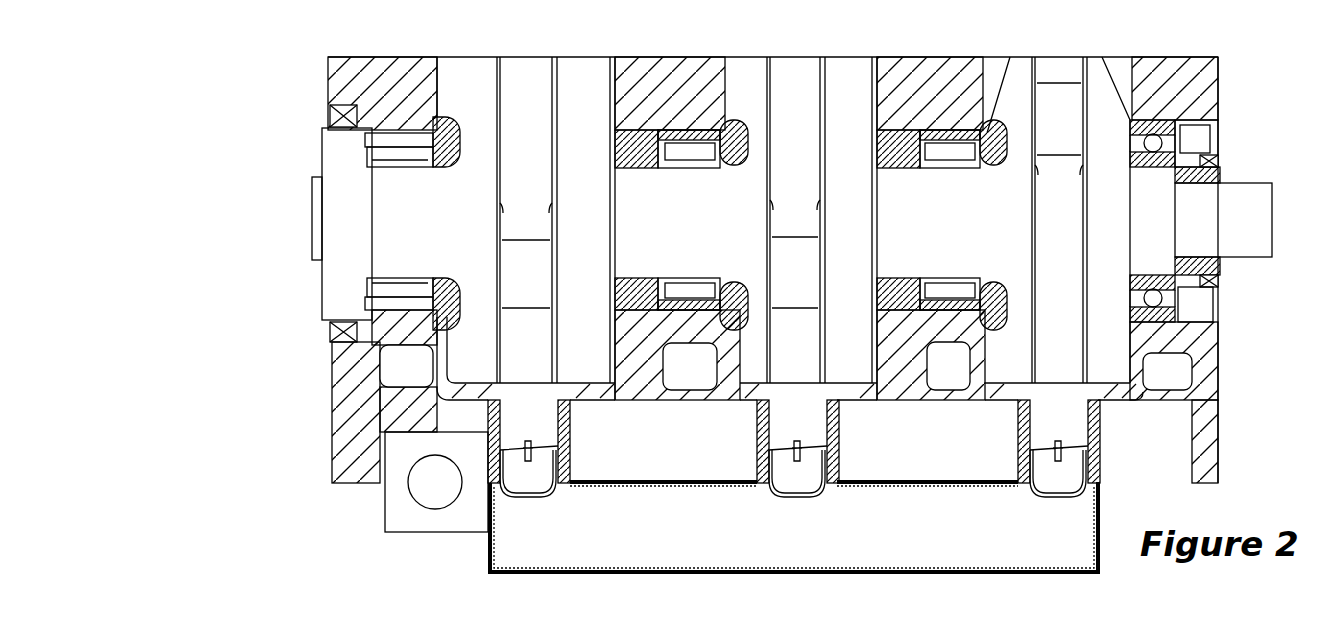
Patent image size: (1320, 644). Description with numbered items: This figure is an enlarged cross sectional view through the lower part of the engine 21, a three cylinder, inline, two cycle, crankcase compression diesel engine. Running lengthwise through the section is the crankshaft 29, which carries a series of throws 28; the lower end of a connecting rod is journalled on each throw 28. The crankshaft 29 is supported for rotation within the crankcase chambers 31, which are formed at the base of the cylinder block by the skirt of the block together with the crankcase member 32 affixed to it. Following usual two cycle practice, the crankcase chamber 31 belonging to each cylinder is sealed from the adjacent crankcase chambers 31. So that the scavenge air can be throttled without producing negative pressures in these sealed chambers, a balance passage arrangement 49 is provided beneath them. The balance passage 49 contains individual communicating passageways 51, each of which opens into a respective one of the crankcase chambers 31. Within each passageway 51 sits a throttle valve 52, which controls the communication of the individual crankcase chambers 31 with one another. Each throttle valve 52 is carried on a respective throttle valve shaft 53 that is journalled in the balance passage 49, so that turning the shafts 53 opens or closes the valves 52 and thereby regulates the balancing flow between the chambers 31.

The engine 21 is at (297, 464).
The throw 28 is at (547, 238).
The crankshaft 29 is at (324, 268).
The crankcase chamber 31 is at (541, 113).
The crankcase member 32 is at (1217, 97).
The balance passage arrangement 49 is at (970, 572).
The communicating passageway 51 is at (563, 473).
The throttle valve 52 is at (549, 446).
The throttle valve shaft 53 is at (530, 457).